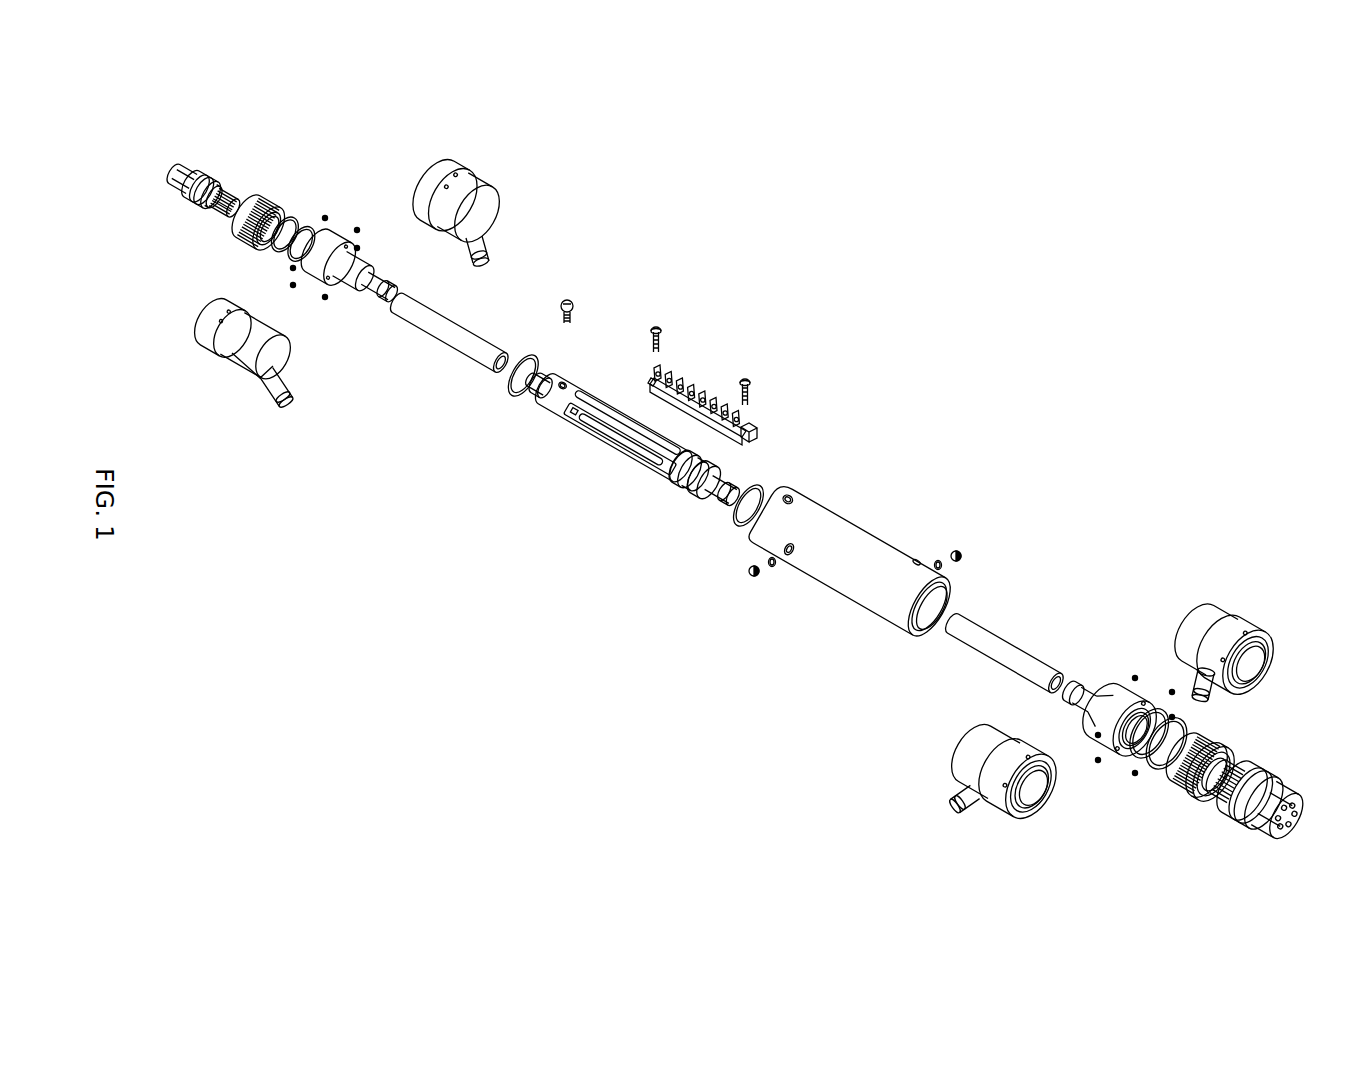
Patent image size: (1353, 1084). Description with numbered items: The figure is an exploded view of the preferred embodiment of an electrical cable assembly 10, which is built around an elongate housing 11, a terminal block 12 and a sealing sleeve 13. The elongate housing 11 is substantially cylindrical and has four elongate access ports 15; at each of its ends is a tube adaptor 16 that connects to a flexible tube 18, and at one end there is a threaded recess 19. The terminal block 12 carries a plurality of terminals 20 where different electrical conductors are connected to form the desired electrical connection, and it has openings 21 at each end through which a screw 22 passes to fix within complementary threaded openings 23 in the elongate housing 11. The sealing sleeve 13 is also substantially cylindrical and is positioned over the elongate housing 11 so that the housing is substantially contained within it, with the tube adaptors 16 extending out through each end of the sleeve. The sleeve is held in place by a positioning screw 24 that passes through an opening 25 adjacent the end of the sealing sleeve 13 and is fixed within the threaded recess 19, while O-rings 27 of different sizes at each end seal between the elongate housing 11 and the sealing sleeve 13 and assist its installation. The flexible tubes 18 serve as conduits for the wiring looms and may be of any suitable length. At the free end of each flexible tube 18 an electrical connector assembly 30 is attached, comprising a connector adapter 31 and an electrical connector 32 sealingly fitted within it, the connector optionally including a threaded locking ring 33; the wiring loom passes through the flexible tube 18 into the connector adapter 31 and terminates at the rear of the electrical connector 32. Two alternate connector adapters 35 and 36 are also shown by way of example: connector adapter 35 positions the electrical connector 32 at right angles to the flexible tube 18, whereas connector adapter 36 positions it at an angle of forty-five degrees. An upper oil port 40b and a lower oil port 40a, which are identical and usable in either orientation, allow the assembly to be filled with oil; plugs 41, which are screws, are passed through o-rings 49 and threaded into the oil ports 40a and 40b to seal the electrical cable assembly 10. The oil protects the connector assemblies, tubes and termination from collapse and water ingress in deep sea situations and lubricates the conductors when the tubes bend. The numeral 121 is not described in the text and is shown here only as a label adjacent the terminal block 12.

The electrical cable assembly 10 is at (1082, 191).
The elongate housing 11 is at (712, 486).
The terminal block 12 is at (652, 403).
The sealing sleeve 13 is at (870, 608).
The elongate access ports 15 is at (592, 396).
The tube adaptor 16 is at (537, 391).
The flexible tube 18 is at (440, 338).
The threaded recess 19 is at (562, 383).
The terminals 20 is at (683, 373).
The openings 21 is at (757, 430).
The screw 22 is at (660, 327).
The threaded openings 23 is at (590, 417).
The positioning screw 24 is at (573, 298).
The opening 25 is at (790, 499).
The O-rings 27 is at (513, 385).
The electrical connector assembly 30 is at (298, 103).
The connector adapter 31 is at (342, 296).
The electrical connector 32 is at (205, 172).
The threaded locking ring 33 is at (242, 232).
The connector adapter 35 is at (482, 192).
The connector adapter 36 is at (232, 356).
The lower oil port 40a is at (790, 556).
The upper oil port 40b is at (920, 562).
The plugs 41 is at (754, 577).
The o-rings 49 is at (772, 567).
The terminal block end 121 is at (650, 380).